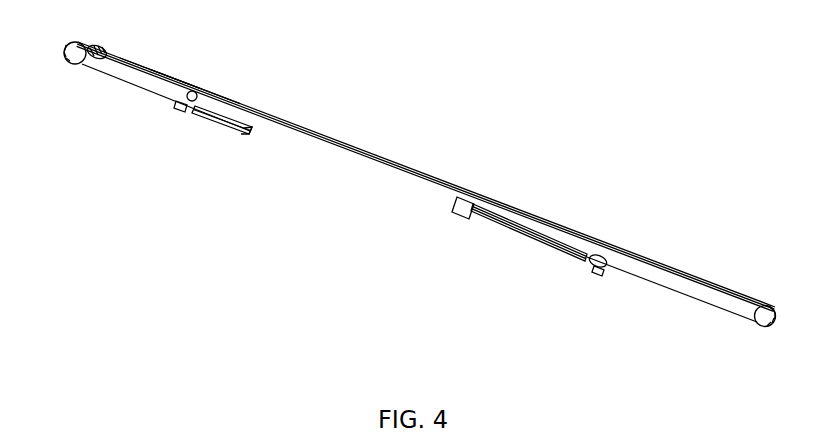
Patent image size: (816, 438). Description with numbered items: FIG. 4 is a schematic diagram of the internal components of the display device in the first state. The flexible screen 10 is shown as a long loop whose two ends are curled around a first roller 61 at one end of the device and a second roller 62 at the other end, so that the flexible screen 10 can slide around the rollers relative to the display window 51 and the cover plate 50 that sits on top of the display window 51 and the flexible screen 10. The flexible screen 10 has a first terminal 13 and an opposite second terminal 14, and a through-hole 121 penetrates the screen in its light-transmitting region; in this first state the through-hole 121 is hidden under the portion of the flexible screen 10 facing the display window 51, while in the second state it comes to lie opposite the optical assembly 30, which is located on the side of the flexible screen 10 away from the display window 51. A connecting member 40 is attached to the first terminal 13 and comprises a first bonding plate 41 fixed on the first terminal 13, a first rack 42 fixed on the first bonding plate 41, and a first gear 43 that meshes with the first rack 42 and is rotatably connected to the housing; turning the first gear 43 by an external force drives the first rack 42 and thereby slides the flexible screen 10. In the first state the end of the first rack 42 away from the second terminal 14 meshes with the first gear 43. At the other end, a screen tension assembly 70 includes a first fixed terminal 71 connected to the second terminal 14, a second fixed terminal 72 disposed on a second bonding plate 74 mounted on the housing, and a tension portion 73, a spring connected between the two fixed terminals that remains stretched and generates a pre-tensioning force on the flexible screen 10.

The flexible screen 10 is at (227, 97).
The first terminal 13 is at (248, 138).
The second terminal 14 is at (622, 274).
The optical assembly 30 is at (100, 50).
The connecting member 40 is at (205, 130).
The first bonding plate 41 is at (192, 103).
The first rack 42 is at (180, 109).
The first gear 43 is at (222, 128).
The cover plate 50 is at (162, 73).
The display window 51 is at (175, 63).
The first roller 61 is at (72, 57).
The second roller 62 is at (760, 329).
The screen tension assembly 70 is at (530, 254).
The first fixed terminal 71 is at (589, 264).
The second fixed terminal 72 is at (470, 217).
The tension portion 73 is at (545, 246).
The second bonding plate 74 is at (591, 283).
The through-hole 121 is at (89, 70).